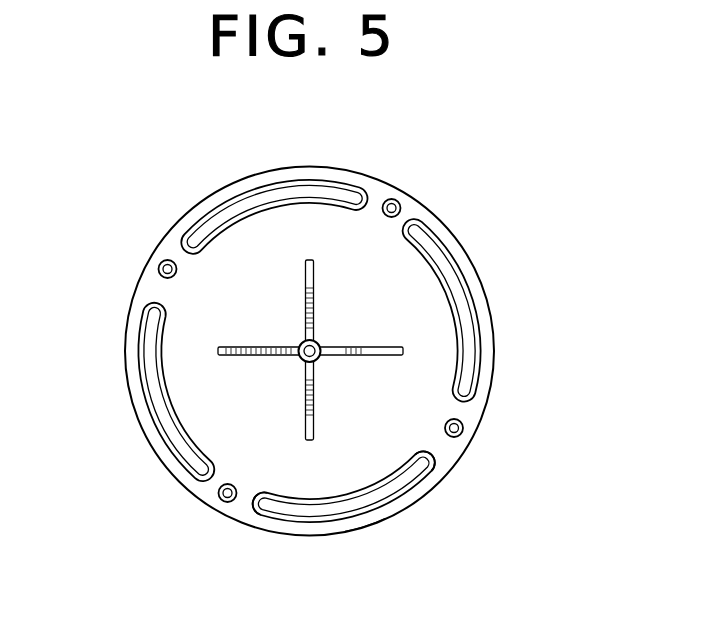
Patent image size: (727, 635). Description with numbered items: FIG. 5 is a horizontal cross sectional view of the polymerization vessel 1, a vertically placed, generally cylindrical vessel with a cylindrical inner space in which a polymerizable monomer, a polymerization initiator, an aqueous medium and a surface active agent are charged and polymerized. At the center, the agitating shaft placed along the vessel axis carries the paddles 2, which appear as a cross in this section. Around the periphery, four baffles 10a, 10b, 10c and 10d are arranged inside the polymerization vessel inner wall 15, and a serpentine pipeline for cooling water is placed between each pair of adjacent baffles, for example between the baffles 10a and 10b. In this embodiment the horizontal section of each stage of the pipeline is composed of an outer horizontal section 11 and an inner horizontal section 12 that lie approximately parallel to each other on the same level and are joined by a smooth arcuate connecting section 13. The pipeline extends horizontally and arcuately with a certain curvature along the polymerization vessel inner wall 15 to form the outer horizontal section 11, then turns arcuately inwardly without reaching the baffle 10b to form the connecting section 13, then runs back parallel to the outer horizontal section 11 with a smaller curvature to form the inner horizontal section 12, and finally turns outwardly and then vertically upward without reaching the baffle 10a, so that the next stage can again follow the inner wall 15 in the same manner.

The polymerization vessel 1 is at (474, 249).
The paddles 2 is at (372, 346).
The baffle 10a is at (224, 500).
The baffle 10b is at (464, 428).
The baffle 10c is at (399, 203).
The baffle 10d is at (156, 262).
The outer horizontal section 11 is at (402, 494).
The inner horizontal section 12 is at (368, 483).
The connecting section 13 is at (433, 440).
The polymerization vessel inner wall 15 is at (366, 518).